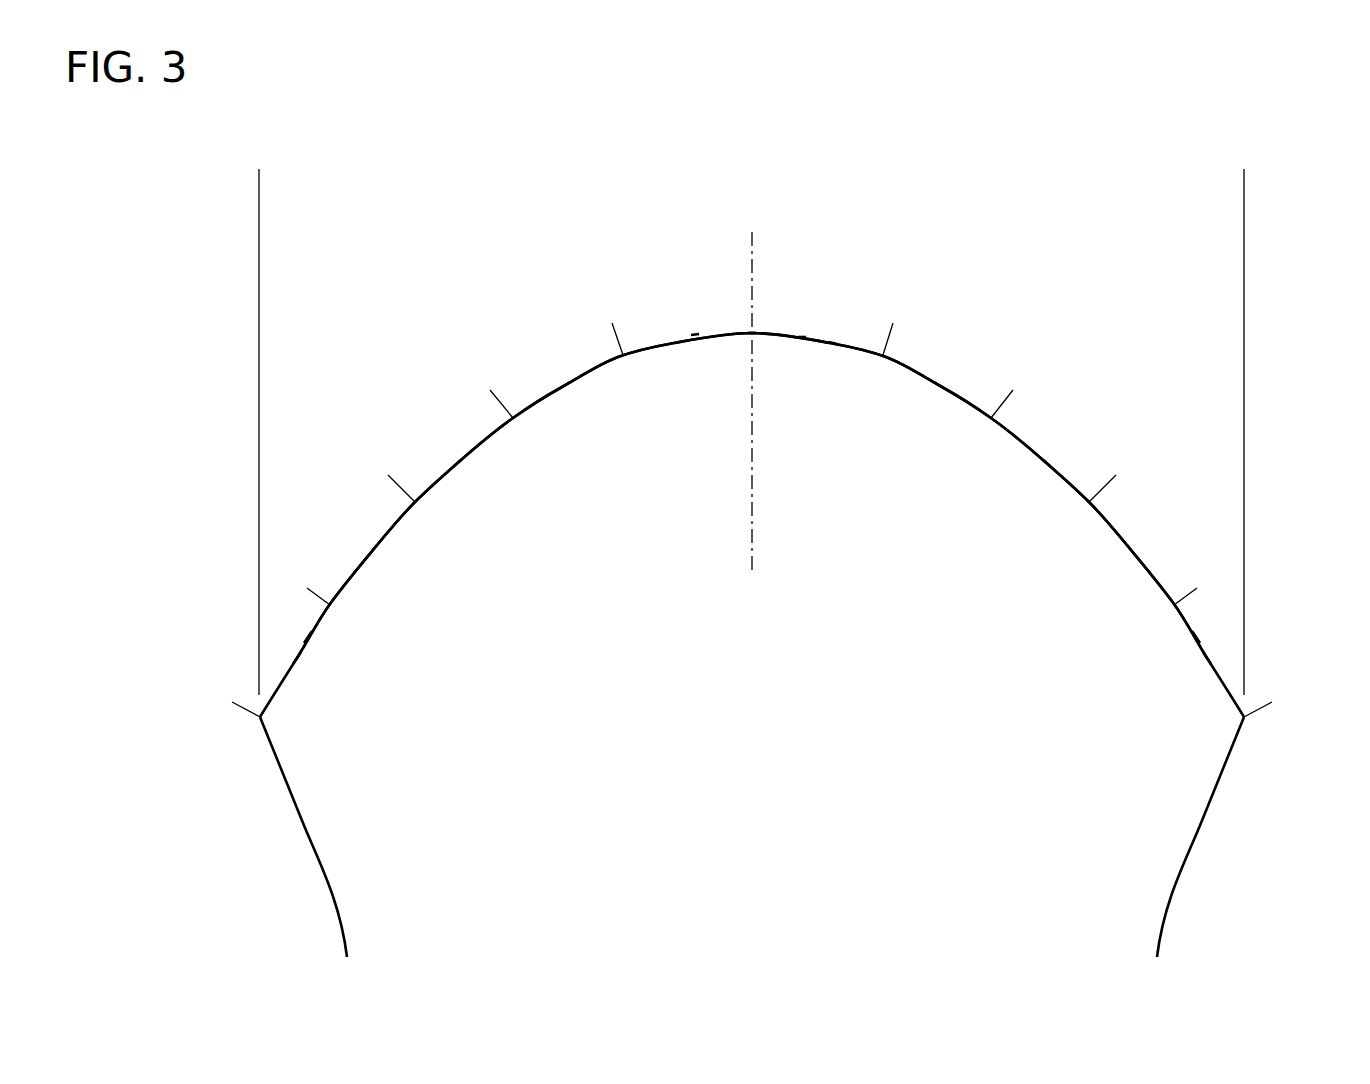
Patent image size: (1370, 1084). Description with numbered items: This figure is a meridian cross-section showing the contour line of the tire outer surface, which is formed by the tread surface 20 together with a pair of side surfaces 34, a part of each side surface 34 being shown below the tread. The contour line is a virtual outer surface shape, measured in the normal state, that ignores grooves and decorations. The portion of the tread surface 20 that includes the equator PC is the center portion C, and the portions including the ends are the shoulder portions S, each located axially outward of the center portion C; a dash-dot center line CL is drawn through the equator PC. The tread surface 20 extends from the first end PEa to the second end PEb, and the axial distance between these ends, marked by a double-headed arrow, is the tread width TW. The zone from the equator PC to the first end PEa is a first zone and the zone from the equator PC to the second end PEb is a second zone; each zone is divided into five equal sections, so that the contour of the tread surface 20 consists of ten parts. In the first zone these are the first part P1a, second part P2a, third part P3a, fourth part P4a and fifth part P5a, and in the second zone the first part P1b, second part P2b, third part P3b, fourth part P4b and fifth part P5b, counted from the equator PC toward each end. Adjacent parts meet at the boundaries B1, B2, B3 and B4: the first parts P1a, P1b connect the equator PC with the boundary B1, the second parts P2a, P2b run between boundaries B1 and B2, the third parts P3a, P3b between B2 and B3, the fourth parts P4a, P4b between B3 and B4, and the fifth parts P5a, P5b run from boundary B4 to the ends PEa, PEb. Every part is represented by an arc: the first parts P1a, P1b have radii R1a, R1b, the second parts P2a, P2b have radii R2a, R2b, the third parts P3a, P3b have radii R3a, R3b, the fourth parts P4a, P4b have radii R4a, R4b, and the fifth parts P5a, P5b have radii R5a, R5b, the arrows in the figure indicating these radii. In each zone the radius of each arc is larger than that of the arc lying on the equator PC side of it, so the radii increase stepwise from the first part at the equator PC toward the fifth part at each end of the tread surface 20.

The tread surface 20 is at (728, 335).
The side surface 34 is at (303, 823).
The width of the tread surface TW is at (259, 180).
The tire equatorial plane (center line) CL is at (758, 546).
The equator PC is at (753, 333).
The center portion C is at (809, 319).
The first part of the first zone P1a is at (695, 335).
The first part of the second zone P1b is at (833, 343).
The second part of the first zone P2a is at (566, 385).
The second part of the second zone P2b is at (938, 385).
The third part of the first zone P3a is at (452, 468).
The third part of the second zone P3b is at (1052, 468).
The fourth part of the first zone P4a is at (373, 550).
The fourth part of the second zone P4b is at (1131, 550).
The fifth part of the first zone P5a is at (291, 668).
The fifth part of the second zone P5b is at (1213, 668).
The boundary B1 is at (623, 355).
The boundary B2 is at (513, 417).
The boundary B3 is at (418, 497).
The boundary B4 is at (330, 602).
The shoulder portion S is at (302, 615).
The first end of the tread surface PEa is at (258, 719).
The second end of the tread surface PEb is at (1246, 719).
The radius R1a is at (675, 367).
The radius R1b is at (819, 364).
The radius R2a is at (570, 410).
The radius R2b is at (926, 405).
The radius R3a is at (473, 481).
The radius R3b is at (1024, 474).
The radius R4a is at (388, 569).
The radius R4b is at (1110, 561).
The radius R5a is at (314, 675).
The radius R5b is at (1184, 666).